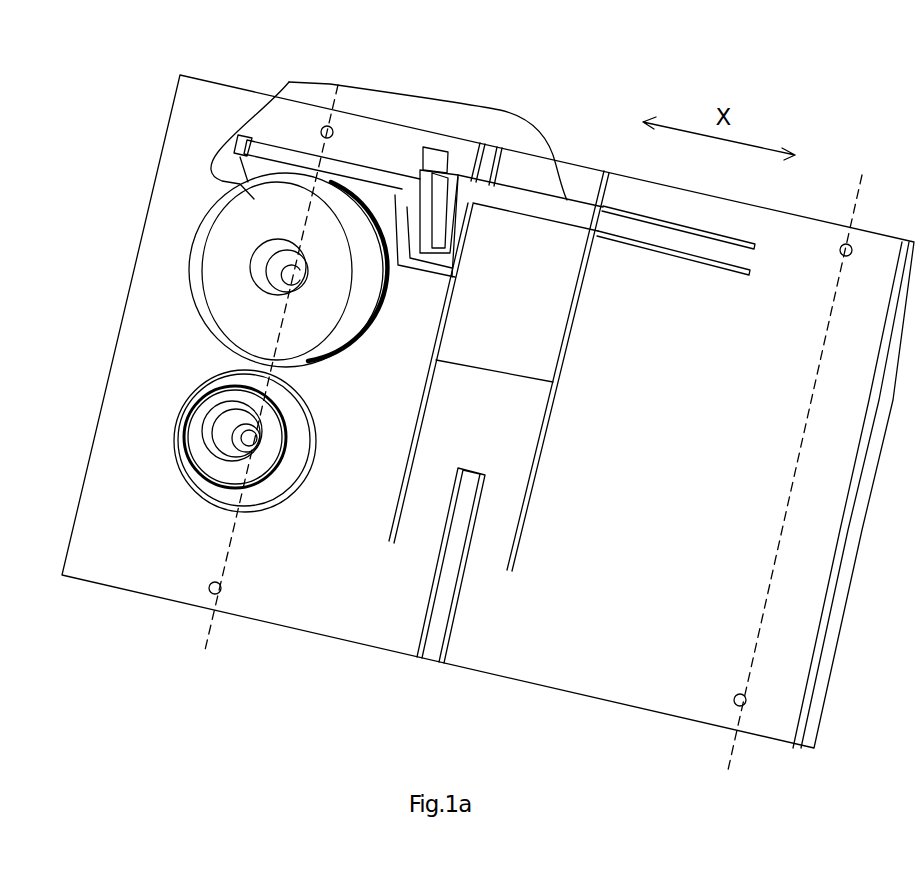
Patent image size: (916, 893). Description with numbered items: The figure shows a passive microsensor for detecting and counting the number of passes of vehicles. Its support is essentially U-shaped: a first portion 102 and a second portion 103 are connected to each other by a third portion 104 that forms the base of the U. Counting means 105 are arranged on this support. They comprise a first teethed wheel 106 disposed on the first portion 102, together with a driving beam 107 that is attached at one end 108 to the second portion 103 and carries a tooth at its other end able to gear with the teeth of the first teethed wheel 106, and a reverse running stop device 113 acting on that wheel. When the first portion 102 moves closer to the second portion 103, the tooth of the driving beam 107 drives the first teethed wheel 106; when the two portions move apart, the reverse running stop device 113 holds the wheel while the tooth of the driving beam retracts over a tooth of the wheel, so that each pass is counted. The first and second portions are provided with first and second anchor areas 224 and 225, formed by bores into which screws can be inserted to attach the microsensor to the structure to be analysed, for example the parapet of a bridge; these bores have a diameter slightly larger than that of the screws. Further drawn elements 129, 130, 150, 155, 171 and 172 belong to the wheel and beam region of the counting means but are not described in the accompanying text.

The first portion 102 is at (488, 411).
The second portion 103 is at (708, 459).
The third portion 104 is at (471, 433).
The counting means 105 is at (178, 417).
The first teethed wheel 106 is at (366, 320).
The driving beam 107 is at (508, 172).
The end of the driving beam 108 is at (757, 250).
The reverse running stop device 113 is at (258, 147).
The roller body 129 is at (245, 271).
The gear wheel 130 is at (172, 435).
The roller 150 is at (212, 224).
The roller hub 155 is at (258, 273).
The gear ring 171 is at (322, 418).
The gear hub 172 is at (258, 516).
The first anchor area 224 is at (160, 603).
The second anchor area 225 is at (742, 708).